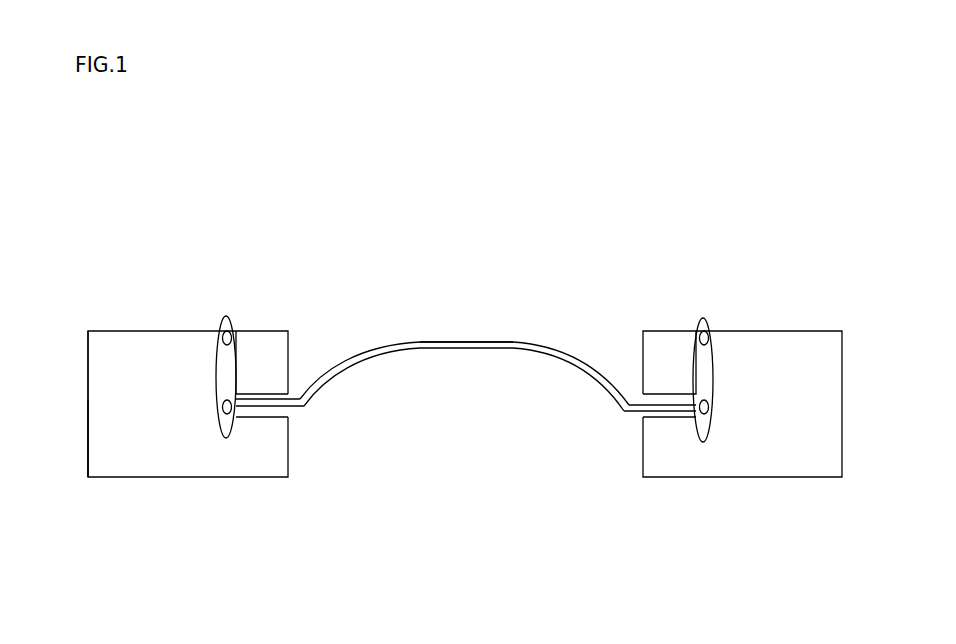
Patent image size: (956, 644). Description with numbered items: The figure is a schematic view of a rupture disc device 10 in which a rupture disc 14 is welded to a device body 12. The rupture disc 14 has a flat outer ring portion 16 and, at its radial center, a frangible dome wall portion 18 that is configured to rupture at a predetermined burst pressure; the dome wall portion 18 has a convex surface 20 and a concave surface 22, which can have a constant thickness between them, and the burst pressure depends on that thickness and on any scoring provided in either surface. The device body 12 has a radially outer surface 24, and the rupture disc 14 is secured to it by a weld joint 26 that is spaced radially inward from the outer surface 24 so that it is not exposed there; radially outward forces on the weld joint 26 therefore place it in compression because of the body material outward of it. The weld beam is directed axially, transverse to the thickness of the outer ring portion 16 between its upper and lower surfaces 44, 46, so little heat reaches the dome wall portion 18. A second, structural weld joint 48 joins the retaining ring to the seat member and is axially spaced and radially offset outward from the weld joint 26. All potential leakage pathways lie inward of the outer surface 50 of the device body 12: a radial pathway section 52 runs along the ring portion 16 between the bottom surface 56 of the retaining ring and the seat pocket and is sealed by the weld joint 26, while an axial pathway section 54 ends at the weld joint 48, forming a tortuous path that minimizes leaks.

The rupture disc device 10 is at (80, 221).
The device body 12 is at (129, 500).
The rupture disc 14 is at (466, 406).
The outer ring portion 16 is at (282, 407).
The dome wall portion 18 is at (533, 345).
The convex surface 20 is at (417, 342).
The concave surface 22 is at (452, 348).
The radially outer surface 24 is at (88, 420).
The weld joint 26 is at (708, 382).
The upper surface 44 is at (629, 404).
The lower surface 46 is at (633, 413).
The weld joint 48 is at (705, 333).
The outer surface 50 is at (88, 367).
The radial pathway section 52 is at (258, 408).
The axial pathway section 54 is at (227, 364).
The bottom surface 56 is at (292, 397).